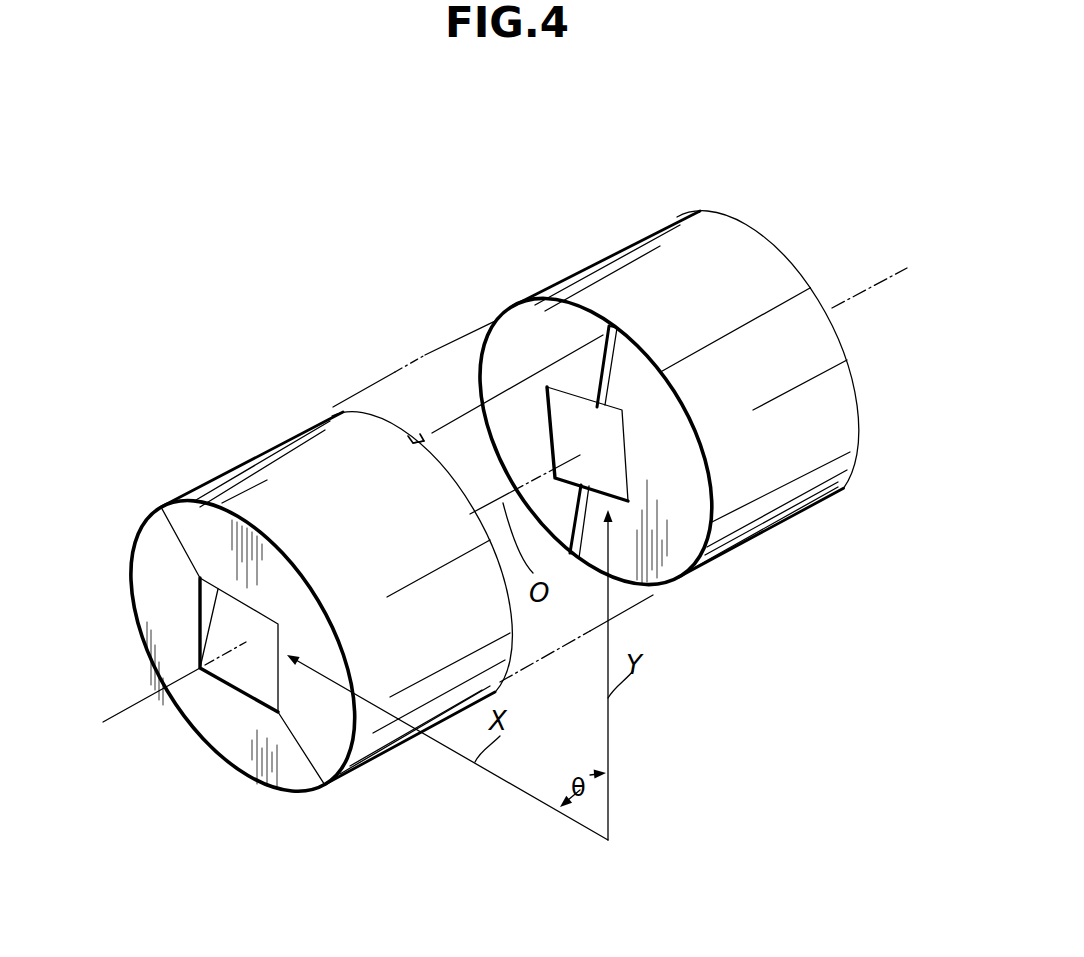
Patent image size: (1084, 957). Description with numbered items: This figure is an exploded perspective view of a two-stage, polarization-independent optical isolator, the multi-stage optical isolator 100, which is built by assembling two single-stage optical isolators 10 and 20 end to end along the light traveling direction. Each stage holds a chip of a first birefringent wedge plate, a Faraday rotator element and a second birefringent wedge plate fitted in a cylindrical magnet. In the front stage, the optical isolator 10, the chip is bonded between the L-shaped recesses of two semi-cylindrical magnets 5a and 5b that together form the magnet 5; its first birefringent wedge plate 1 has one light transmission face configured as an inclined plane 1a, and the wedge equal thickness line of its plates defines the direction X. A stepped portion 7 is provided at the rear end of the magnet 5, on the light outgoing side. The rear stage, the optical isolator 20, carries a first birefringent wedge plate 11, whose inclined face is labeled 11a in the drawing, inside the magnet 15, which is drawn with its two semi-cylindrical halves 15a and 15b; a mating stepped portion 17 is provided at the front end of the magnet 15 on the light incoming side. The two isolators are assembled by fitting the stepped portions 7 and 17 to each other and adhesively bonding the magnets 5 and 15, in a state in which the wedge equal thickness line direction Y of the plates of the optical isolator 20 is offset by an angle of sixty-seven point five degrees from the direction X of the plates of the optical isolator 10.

The multi-stage optical isolator 100 is at (415, 264).
The optical isolator 10 is at (313, 404).
The optical isolator 20 is at (484, 298).
The cylindrical magnet 5 is at (215, 420).
The semi-cylindrical magnet 5a is at (153, 548).
The semi-cylindrical magnet 5b is at (197, 520).
The stepped portion 7 is at (400, 423).
The first birefringent wedge plate 1 is at (353, 734).
The inclined plane 1a is at (249, 683).
The magnet 15 is at (866, 145).
The first half piece of second member 15a is at (716, 230).
The second half piece of second member 15b is at (793, 333).
The stepped portion 17 is at (634, 360).
The first birefringent wedge plate 11 is at (600, 439).
The inner wall of square hole 11a is at (562, 427).